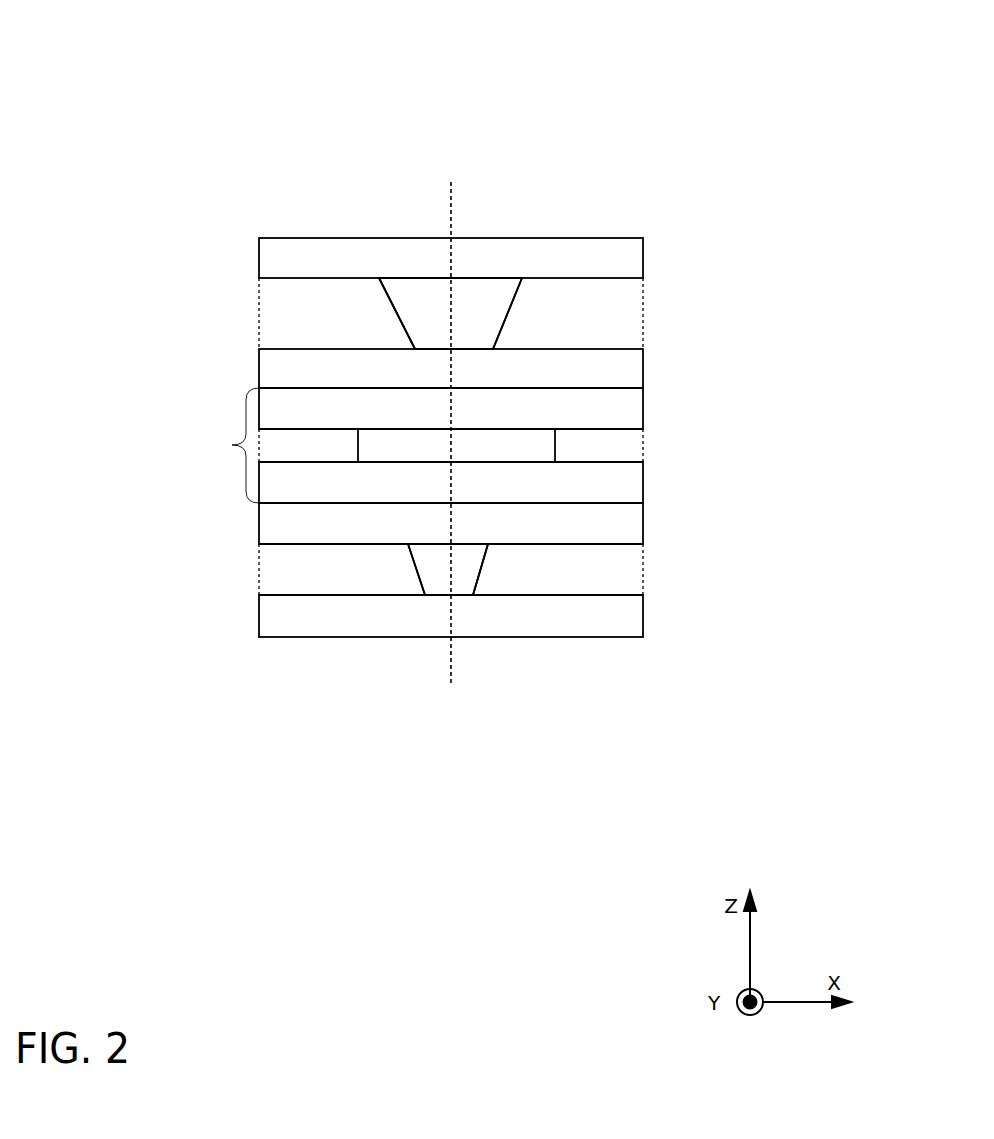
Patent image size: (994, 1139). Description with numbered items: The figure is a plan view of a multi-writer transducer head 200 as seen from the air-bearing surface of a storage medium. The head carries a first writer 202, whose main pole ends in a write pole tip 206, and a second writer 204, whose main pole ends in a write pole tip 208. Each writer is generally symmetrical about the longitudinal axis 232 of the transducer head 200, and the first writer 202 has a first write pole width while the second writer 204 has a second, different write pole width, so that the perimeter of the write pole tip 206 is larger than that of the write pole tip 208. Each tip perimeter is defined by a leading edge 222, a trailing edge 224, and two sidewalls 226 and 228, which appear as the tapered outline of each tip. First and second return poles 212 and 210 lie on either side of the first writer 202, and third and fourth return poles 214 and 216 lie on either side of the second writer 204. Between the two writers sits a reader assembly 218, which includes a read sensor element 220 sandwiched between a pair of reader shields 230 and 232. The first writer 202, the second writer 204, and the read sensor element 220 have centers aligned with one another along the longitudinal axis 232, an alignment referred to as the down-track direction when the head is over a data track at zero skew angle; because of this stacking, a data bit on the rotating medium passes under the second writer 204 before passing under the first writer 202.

The multi-writer transducer head 200 is at (158, 66).
The first writer 202 is at (404, 289).
The second writer 204 is at (408, 557).
The write pole tip 206 is at (435, 328).
The write pole tip 208 is at (436, 575).
The second return pole 210 is at (435, 381).
The first return pole 212 is at (434, 271).
The third return pole 214 is at (451, 523).
The fourth return pole 216 is at (451, 616).
The reader assembly 218 is at (230, 437).
The read sensor element 220 is at (451, 445).
The leading edge 222 is at (476, 347).
The trailing edge 224 is at (487, 278).
The sidewall 226 is at (397, 316).
The sidewall 228 is at (507, 316).
The reader shield 230 is at (451, 408).
The reader shield / longitudinal axis 232 is at (451, 193).